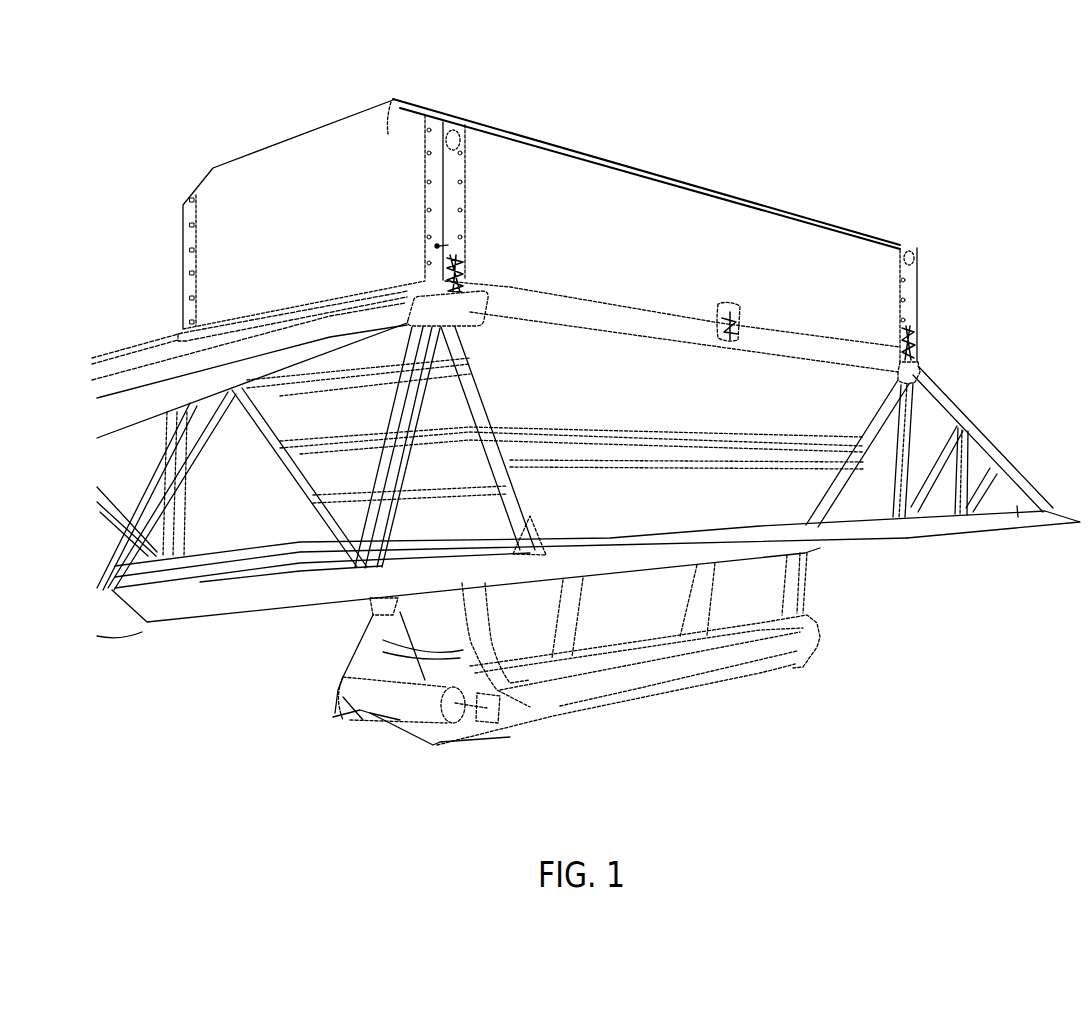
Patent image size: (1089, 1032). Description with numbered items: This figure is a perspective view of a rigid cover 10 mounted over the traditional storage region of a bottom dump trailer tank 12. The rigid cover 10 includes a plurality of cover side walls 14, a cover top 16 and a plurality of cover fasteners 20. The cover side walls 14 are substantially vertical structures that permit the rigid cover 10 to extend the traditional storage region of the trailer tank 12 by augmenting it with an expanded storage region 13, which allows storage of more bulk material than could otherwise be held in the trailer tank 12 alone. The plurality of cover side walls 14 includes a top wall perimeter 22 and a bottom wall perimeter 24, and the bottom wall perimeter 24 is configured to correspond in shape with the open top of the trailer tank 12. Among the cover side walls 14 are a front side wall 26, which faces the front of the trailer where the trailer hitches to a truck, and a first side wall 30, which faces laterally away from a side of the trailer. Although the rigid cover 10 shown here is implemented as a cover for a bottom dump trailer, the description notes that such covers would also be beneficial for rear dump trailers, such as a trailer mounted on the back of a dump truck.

The rigid cover 10 is at (769, 116).
The bottom dump trailer tank 12 is at (754, 511).
The expanded storage region 13 is at (217, 255).
The cover side walls 14 is at (485, 165).
The cover top 16 is at (745, 197).
The cover fasteners 20 is at (459, 236).
The top wall perimeter 22 is at (843, 227).
The bottom wall perimeter 24 is at (808, 338).
The front side wall 26 is at (322, 234).
The first side wall 30 is at (680, 260).